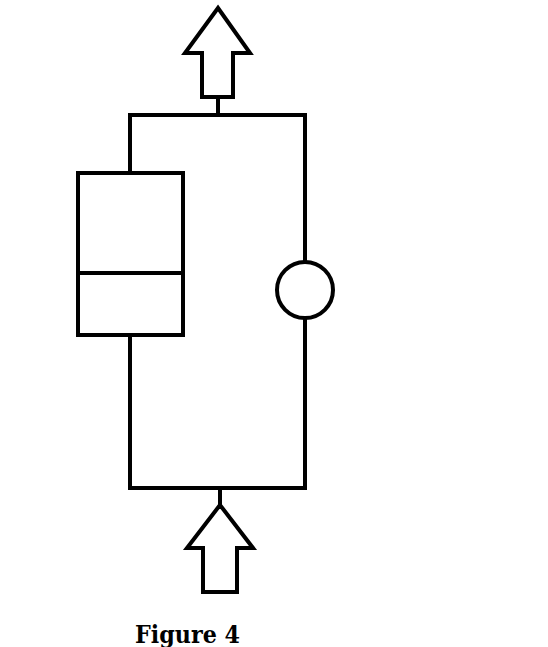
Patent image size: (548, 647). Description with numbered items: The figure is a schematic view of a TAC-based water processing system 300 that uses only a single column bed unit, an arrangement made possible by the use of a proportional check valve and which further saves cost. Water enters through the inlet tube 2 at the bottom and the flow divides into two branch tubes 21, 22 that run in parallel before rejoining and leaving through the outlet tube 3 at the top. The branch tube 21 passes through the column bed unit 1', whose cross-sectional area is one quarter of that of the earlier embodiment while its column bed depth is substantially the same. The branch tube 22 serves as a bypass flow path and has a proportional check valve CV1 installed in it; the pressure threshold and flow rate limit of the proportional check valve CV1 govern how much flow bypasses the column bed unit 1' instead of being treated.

The TAC-based water processing system 300 is at (221, 273).
The column bed unit 1' is at (113, 254).
The branch tube 21 is at (113, 301).
The branch tube 22 is at (289, 301).
The proportional check valve CV1 is at (305, 290).
The inlet tube 2 is at (220, 540).
The outlet tube 3 is at (217, 61).